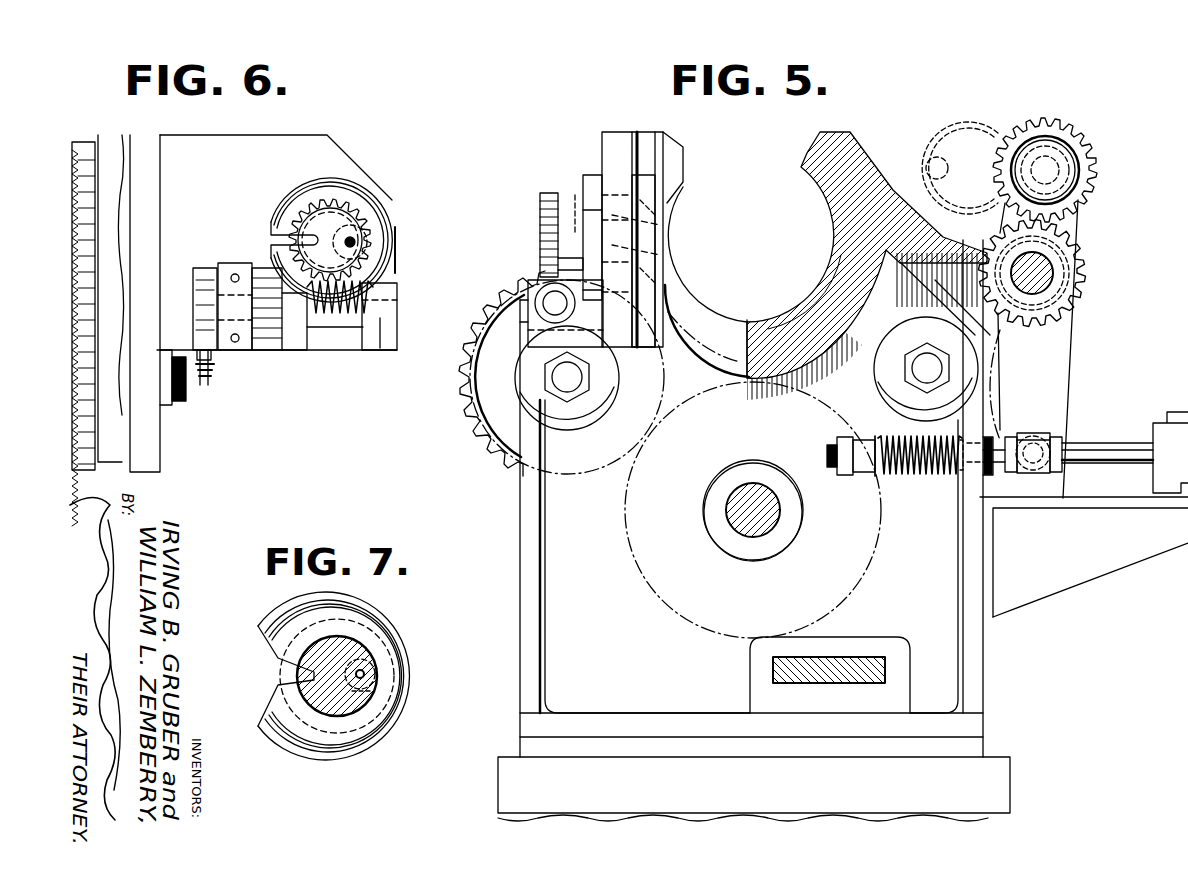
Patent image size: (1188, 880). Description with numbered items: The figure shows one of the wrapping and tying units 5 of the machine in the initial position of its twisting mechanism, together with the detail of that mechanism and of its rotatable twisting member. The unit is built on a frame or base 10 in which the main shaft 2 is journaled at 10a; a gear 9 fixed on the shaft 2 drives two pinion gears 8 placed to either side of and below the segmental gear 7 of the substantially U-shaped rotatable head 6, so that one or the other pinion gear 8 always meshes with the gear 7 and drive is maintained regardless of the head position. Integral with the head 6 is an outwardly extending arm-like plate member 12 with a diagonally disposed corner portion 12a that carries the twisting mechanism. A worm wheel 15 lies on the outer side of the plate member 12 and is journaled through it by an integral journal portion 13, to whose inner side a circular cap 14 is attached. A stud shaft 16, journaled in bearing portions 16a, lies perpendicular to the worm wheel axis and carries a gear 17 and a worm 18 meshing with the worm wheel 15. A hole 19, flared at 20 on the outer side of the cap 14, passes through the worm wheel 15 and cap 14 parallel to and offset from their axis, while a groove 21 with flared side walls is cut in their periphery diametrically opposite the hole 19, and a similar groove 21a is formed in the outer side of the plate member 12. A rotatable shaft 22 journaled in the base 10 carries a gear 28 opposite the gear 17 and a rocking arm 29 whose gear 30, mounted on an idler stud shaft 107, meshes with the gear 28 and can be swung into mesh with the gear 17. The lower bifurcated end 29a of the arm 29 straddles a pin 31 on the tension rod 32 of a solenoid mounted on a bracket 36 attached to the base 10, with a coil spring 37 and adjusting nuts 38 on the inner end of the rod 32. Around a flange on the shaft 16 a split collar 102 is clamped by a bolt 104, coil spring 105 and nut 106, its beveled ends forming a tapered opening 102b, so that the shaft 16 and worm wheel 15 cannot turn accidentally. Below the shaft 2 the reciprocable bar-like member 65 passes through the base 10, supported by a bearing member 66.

In FIG. 5, the shaft 2 is at (762, 516).
In FIG. 6, the wrapping and tying unit 5 is at (305, 130).
In FIG. 5, the rotatable head 6 is at (700, 316).
In FIG. 6, the gear 7 is at (84, 142).
In FIG. 5, the gear 7 is at (696, 358).
In FIG. 6, the pinion gear 8 is at (86, 372).
In FIG. 5, the pinion gear 8 is at (470, 396).
In FIG. 5, the gear 9 is at (625, 496).
In FIG. 6, the base 10 is at (140, 150).
In FIG. 5, the base 10 is at (520, 496).
In FIG. 5, the journal 10a is at (705, 500).
In FIG. 6, the plate member 12 is at (330, 152).
In FIG. 5, the plate member 12 is at (610, 157).
In FIG. 6, the corner portion 12a is at (333, 220).
In FIG. 6, the journal portion 13 is at (340, 195).
In FIG. 7, the journal portion 13 is at (380, 636).
In FIG. 5, the journal portion 13 is at (618, 248).
In FIG. 5, the cap 14 is at (645, 188).
In FIG. 6, the worm wheel 15 is at (355, 238).
In FIG. 5, the worm wheel 15 is at (546, 192).
In FIG. 6, the stud shaft 16 is at (398, 300).
In FIG. 5, the stud shaft 16 is at (560, 305).
In FIG. 6, the bearing portion 16a is at (243, 320).
In FIG. 5, the bearing portion 16a is at (535, 322).
In FIG. 6, the gear 17 is at (268, 338).
In FIG. 5, the gear 17 is at (522, 280).
In FIG. 6, the worm 18 is at (330, 320).
In FIG. 5, the worm 18 is at (512, 294).
In FIG. 6, the hole 19 is at (354, 240).
In FIG. 7, the hole 19 is at (364, 675).
In FIG. 5, the hole 19 is at (575, 195).
In FIG. 7, the flared portion 20 is at (372, 691).
In FIG. 5, the flared portion 20 is at (660, 230).
In FIG. 6, the groove 21 is at (298, 226).
In FIG. 7, the groove 21 is at (280, 672).
In FIG. 6, the groove 21a is at (396, 240).
In FIG. 5, the rotatable shaft 22 is at (1042, 278).
In FIG. 5, the gear 28 is at (1085, 254).
In FIG. 5, the rocking arm 29 is at (1076, 225).
In FIG. 5, the bifurcated end 29a is at (1040, 436).
In FIG. 5, the gear 30 is at (1056, 136).
In FIG. 5, the pin 31 is at (1034, 474).
In FIG. 5, the tension rod 32 is at (1108, 448).
In FIG. 5, the bracket 36 is at (1102, 566).
In FIG. 5, the coil spring 37 is at (918, 476).
In FIG. 5, the adjusting nuts 38 is at (856, 466).
In FIG. 5, the bar-like member 65 is at (826, 667).
In FIG. 5, the bearing member 66 is at (765, 685).
In FIG. 6, the split collar 102 is at (202, 268).
In FIG. 6, the tapered opening 102b is at (186, 320).
In FIG. 6, the bolt 104 is at (205, 370).
In FIG. 6, the coil spring 105 is at (212, 366).
In FIG. 6, the nut 106 is at (214, 360).
In FIG. 5, the idler stud shaft 107 is at (1060, 166).